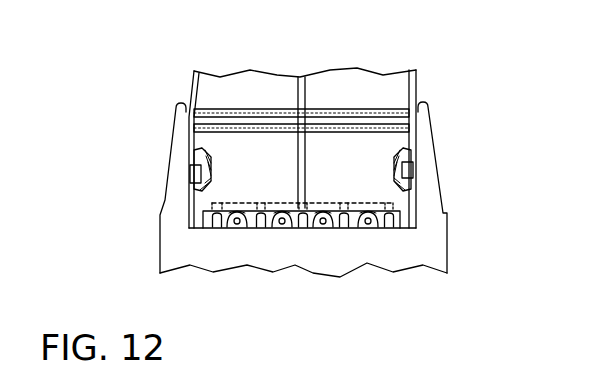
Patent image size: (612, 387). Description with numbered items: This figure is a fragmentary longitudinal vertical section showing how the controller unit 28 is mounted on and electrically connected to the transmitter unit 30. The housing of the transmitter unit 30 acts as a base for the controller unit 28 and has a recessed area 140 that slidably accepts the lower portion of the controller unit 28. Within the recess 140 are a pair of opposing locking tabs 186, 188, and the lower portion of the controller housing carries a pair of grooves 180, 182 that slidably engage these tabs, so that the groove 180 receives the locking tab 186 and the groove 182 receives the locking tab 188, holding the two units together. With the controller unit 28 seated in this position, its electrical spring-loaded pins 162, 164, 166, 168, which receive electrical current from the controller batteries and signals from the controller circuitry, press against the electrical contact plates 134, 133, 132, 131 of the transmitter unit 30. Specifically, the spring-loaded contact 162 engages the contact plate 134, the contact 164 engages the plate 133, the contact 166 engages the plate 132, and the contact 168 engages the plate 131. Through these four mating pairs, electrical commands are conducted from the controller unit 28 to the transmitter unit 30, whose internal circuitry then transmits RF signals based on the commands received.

The controller unit 28 is at (433, 79).
The transmitter unit 30 is at (460, 254).
The electrical contact plate 131 is at (368, 229).
The electrical contact plate 132 is at (323, 229).
The electrical contact plate 133 is at (278, 229).
The electrical contact plate 134 is at (238, 229).
The recessed area 140 is at (245, 350).
The electrical spring-loaded pin 162 is at (237, 212).
The electrical spring-loaded pin 164 is at (283, 212).
The electrical spring-loaded pin 166 is at (322, 212).
The electrical spring-loaded pin 168 is at (368, 212).
The groove 180 is at (193, 154).
The groove 182 is at (411, 155).
The locking tab 186 is at (198, 171).
The locking tab 188 is at (413, 173).